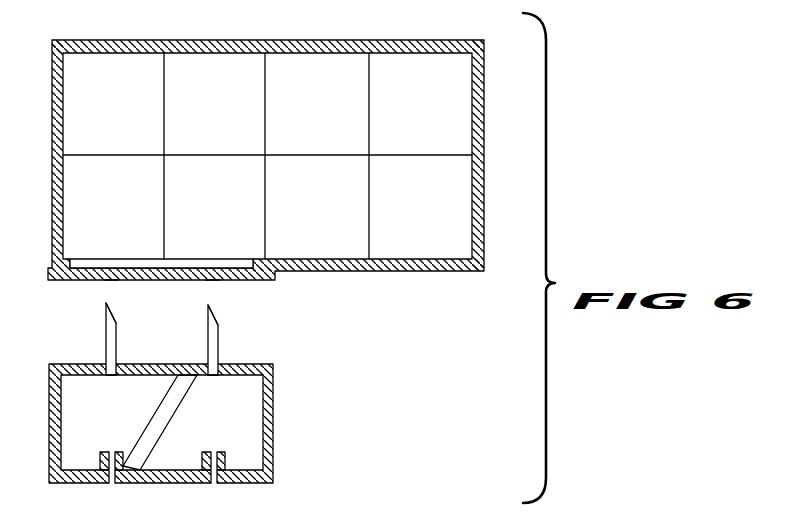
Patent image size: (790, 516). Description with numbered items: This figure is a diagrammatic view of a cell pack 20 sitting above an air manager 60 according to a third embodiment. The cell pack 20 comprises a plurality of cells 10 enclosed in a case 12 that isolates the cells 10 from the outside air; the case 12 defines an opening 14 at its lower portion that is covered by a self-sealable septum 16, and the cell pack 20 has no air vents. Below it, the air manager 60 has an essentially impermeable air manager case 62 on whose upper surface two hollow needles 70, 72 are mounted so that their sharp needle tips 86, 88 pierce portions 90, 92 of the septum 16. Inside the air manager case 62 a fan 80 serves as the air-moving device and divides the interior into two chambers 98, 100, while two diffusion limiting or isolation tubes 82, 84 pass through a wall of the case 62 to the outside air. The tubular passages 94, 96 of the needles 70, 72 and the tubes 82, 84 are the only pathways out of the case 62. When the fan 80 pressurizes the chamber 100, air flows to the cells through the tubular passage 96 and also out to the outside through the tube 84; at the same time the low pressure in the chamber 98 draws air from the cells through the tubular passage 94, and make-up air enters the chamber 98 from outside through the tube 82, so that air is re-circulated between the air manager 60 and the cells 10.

The cells 10 is at (440, 117).
The case 12 is at (266, 165).
The opening 14 is at (137, 263).
The self-sealable septum 16 is at (276, 279).
The cell pack 20 is at (257, 169).
The air manager 60 is at (194, 408).
The air manager case 62 is at (274, 382).
The needle 70 is at (106, 352).
The needle 72 is at (208, 352).
The fan 80 is at (165, 412).
The diffusion limiting tube 82 is at (111, 484).
The diffusion limiting tube 84 is at (213, 484).
The needle tip 86 is at (106, 310).
The needle tip 88 is at (208, 312).
The portion of the septum 90 is at (110, 281).
The portion of the septum 92 is at (213, 281).
The tubular passage 94 is at (112, 376).
The tubular passage 96 is at (214, 376).
The chamber 98 is at (125, 442).
The chamber 100 is at (215, 442).